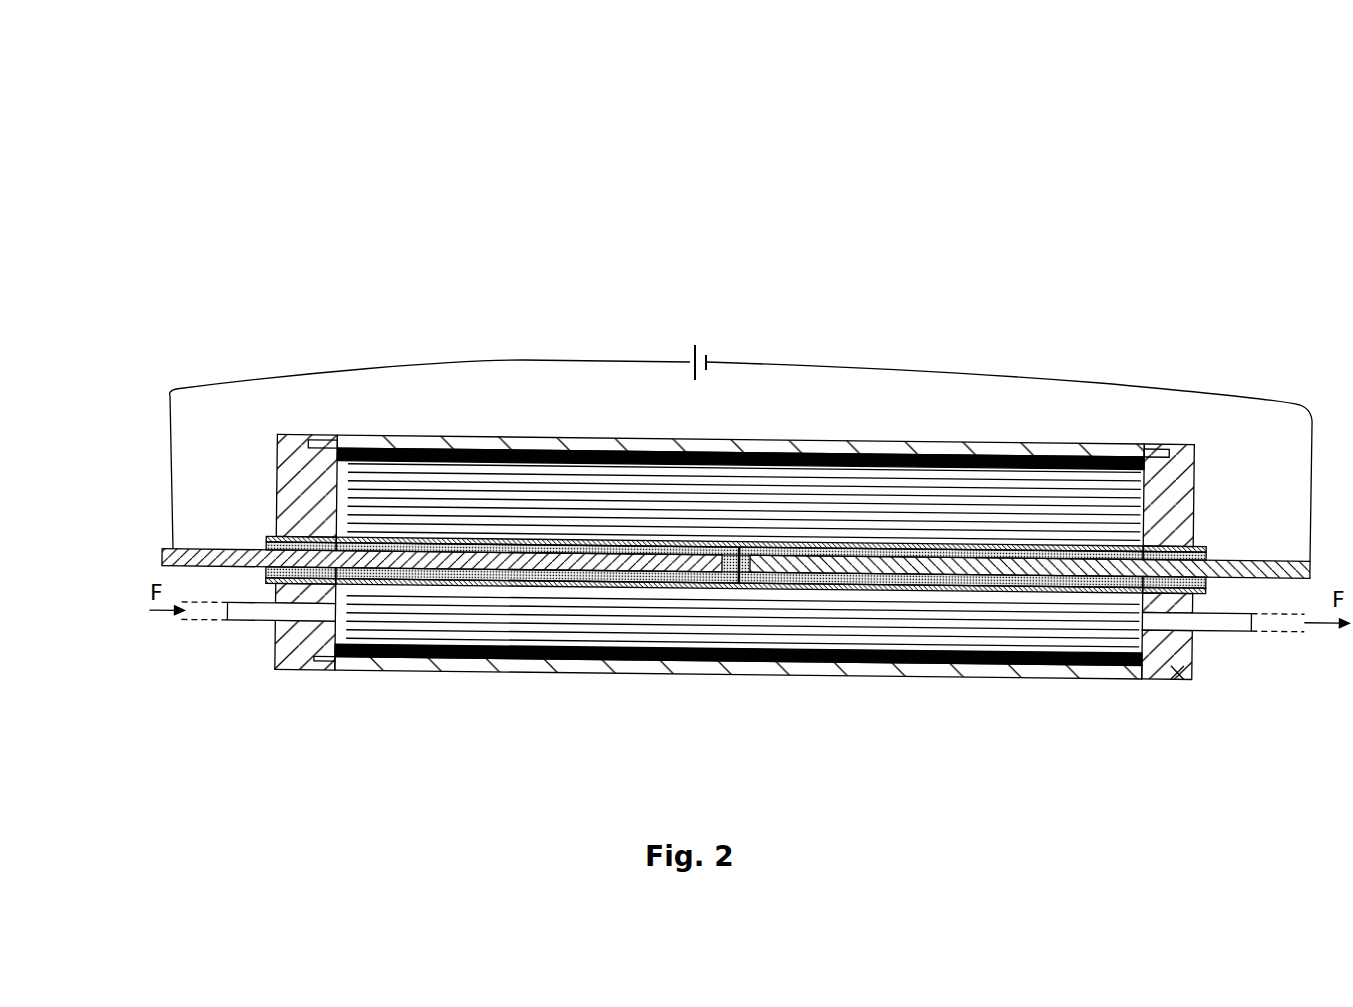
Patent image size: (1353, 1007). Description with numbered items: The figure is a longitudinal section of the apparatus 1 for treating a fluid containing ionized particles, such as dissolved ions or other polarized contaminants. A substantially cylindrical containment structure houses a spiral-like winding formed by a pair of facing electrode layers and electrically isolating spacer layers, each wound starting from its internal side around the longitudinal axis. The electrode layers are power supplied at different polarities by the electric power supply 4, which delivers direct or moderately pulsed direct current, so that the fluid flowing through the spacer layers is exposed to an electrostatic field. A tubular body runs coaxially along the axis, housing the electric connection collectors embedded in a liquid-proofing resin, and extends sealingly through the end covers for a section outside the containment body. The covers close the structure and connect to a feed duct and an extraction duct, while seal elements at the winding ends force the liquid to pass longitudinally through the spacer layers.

The apparatus for treating a fluid containing ionized particles 1 is at (238, 222).
The electric power supply 4 is at (740, 324).